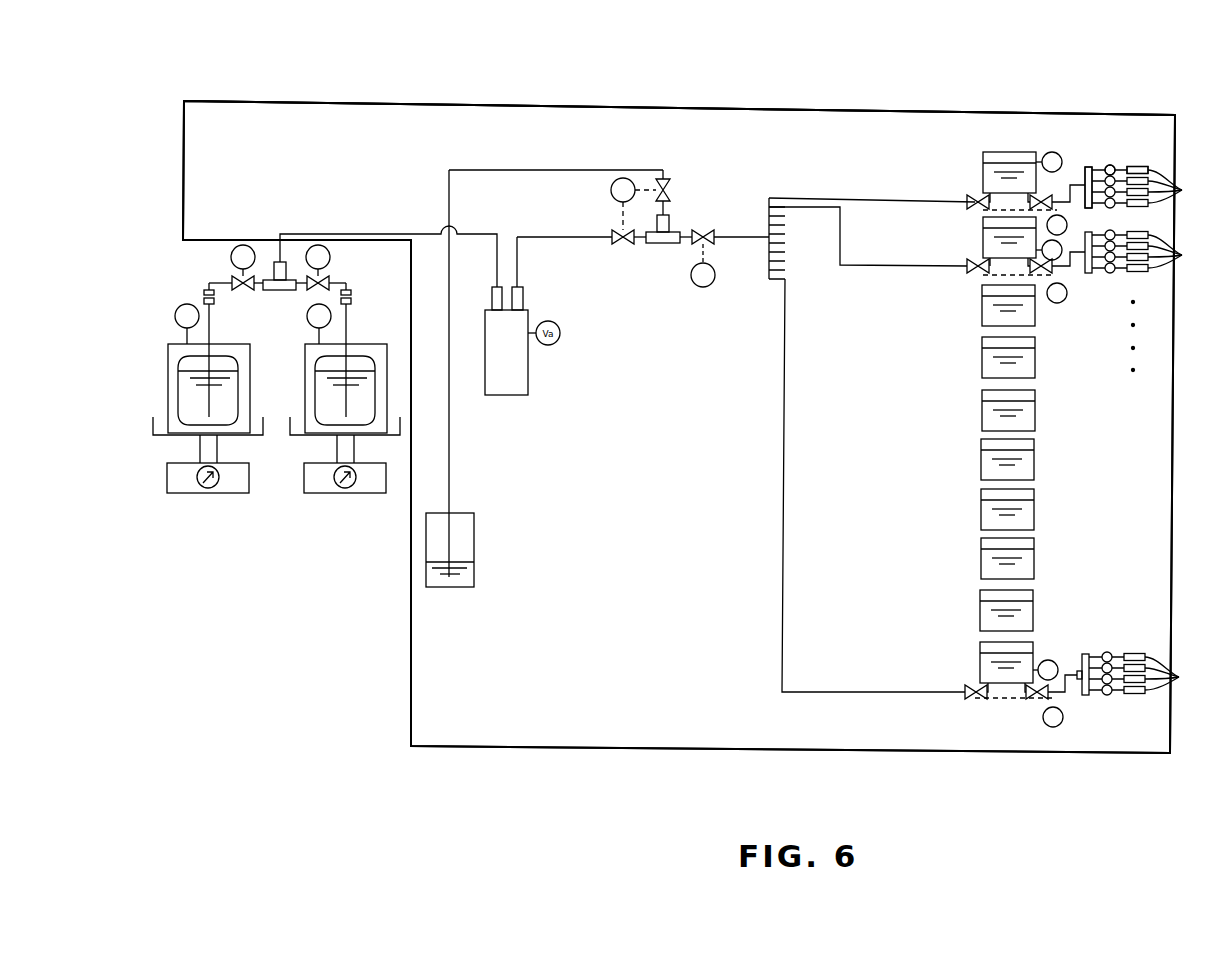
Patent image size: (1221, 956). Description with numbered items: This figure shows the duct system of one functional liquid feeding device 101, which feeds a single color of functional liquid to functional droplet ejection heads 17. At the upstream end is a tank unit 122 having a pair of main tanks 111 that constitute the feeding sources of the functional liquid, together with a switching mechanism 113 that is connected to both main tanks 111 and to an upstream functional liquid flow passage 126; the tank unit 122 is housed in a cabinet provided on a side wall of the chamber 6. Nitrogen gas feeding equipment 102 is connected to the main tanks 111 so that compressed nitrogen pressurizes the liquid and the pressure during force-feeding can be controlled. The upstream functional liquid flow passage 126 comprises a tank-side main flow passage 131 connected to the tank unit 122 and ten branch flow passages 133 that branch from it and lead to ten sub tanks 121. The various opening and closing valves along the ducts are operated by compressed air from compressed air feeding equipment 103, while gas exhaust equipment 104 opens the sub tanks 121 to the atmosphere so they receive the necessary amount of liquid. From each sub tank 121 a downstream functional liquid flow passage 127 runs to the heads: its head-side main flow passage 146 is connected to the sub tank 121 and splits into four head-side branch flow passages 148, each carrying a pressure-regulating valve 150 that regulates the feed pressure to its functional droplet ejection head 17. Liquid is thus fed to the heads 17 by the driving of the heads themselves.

The chamber 6 is at (507, 748).
The functional droplet ejection head 17 is at (1176, 430).
The functional liquid feeding device 101 is at (248, 73).
The nitrogen gas feeding equipment 102 is at (175, 316).
The compressed air feeding equipment 103 is at (231, 257).
The gas exhaust equipment 104 is at (1052, 152).
The main tank 111 is at (170, 350).
The switching mechanism 113 is at (274, 311).
The sub tank 121 is at (1012, 152).
The tank unit 122 is at (285, 423).
The upstream functional liquid flow passage 126 is at (518, 118).
The downstream functional liquid flow passage 127 is at (1100, 393).
The tank-side main flow passage 131 is at (399, 238).
The branch flow passage 133 is at (892, 265).
The head-side main flow passage 146 is at (1073, 185).
The head-side branch flow passage 148 is at (1132, 167).
The pressure-regulating valve 150 is at (1110, 165).